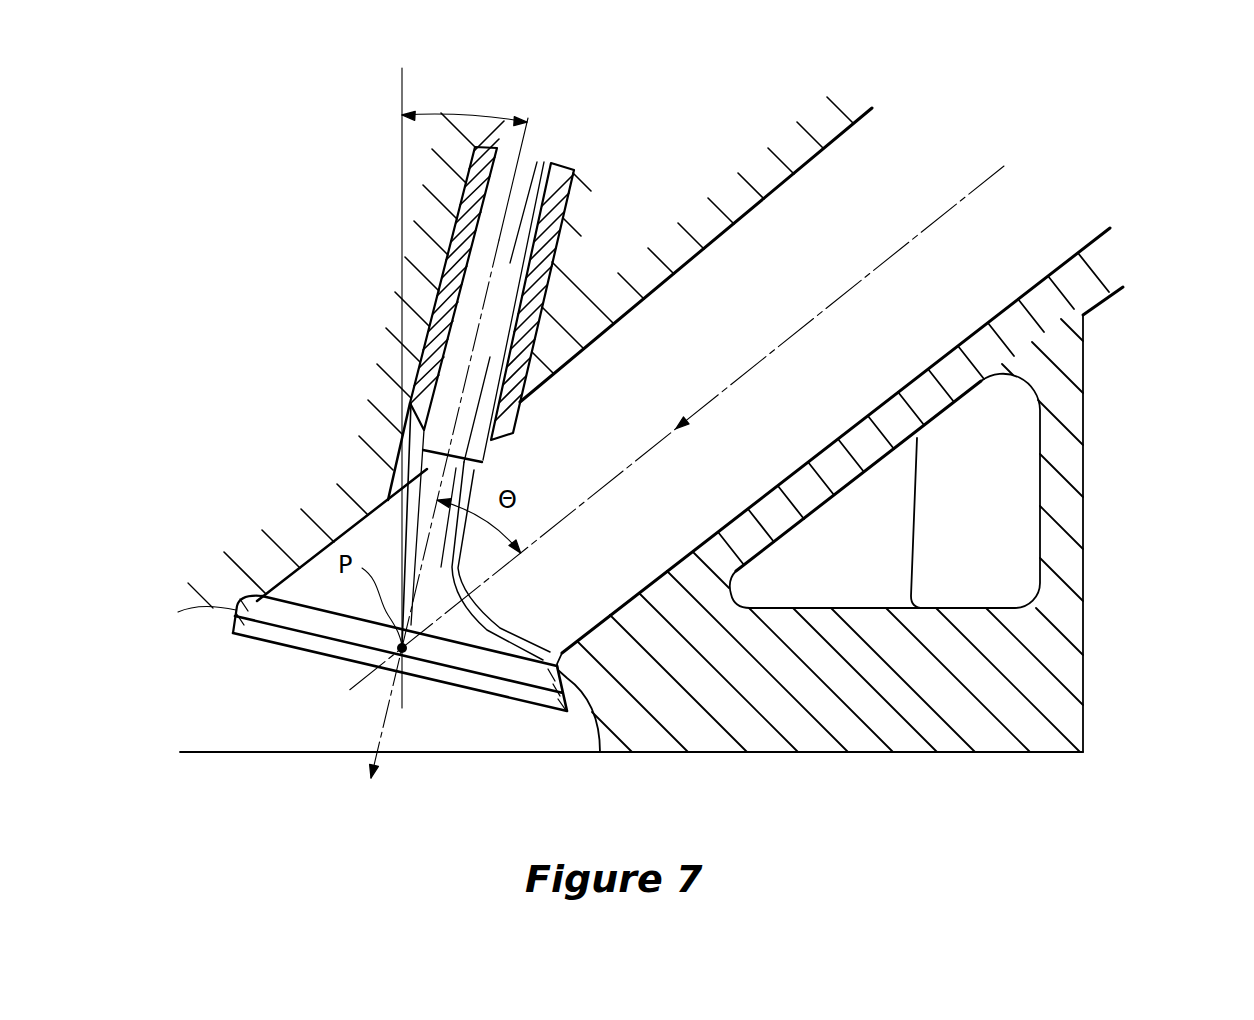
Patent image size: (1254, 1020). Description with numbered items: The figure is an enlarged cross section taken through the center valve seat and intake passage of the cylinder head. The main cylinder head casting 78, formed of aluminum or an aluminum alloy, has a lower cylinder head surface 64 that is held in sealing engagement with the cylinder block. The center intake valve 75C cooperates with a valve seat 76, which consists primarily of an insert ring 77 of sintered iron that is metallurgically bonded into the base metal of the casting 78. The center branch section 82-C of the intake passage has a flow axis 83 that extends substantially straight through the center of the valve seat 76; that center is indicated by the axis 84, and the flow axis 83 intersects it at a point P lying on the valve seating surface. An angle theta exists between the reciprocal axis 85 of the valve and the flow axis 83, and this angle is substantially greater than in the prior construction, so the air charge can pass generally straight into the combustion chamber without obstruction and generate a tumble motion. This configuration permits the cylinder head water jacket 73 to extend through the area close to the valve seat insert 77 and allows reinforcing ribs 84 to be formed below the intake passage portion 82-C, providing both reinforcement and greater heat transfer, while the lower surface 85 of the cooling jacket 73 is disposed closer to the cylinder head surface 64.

The lower cylinder head surface 64 is at (762, 753).
The cylinder head water jacket 73 is at (1020, 500).
The center intake valve 75C is at (487, 640).
The valve seat 76 is at (557, 712).
The insert ring 77 is at (236, 614).
The main cylinder head casting 78 is at (1073, 614).
The center branch section of intake passage 82-C is at (720, 255).
The flow axis 83 is at (893, 255).
The valve seat center axis 84 is at (402, 93).
The reciprocal axis of the valve 85 is at (526, 132).